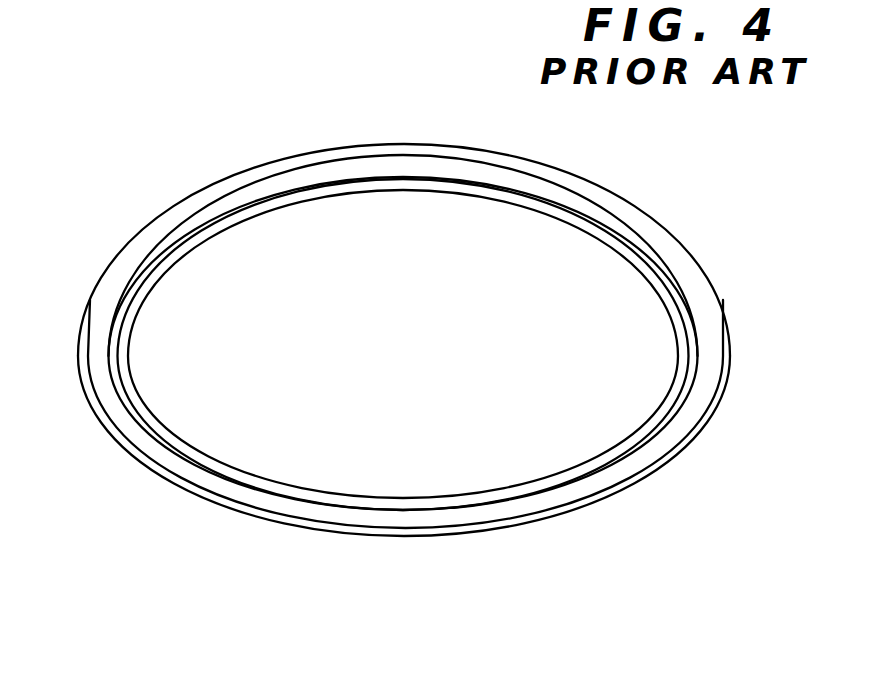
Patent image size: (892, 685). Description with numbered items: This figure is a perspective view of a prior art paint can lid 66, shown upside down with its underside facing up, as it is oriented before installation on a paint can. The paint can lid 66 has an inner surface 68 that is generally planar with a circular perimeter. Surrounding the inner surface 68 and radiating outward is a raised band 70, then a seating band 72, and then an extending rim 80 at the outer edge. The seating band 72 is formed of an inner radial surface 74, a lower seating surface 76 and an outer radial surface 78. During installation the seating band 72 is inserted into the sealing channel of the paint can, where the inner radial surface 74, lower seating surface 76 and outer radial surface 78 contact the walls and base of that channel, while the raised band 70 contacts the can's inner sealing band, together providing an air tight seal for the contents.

The paint can lid 66 is at (708, 173).
The inner surface 68 is at (385, 392).
The raised band 70 is at (167, 252).
The seating band 72 is at (138, 226).
The inner radial surface 74 is at (271, 183).
The lower seating surface 76 is at (287, 163).
The outer radial surface 78 is at (482, 515).
The extending rim 80 is at (118, 440).